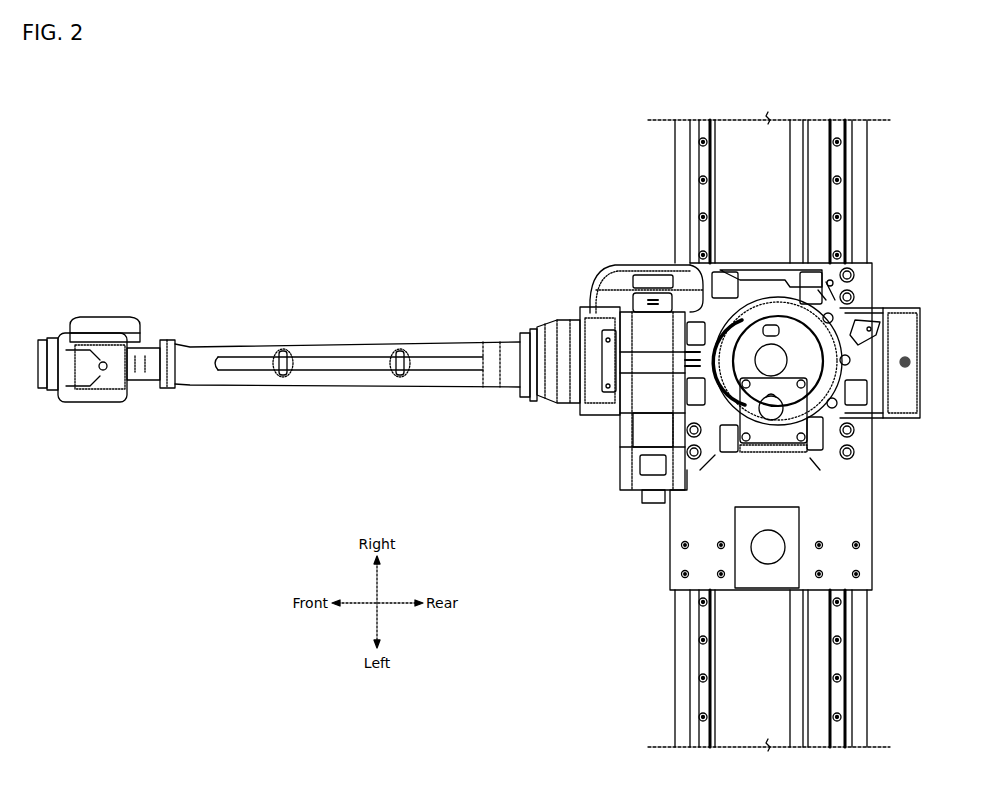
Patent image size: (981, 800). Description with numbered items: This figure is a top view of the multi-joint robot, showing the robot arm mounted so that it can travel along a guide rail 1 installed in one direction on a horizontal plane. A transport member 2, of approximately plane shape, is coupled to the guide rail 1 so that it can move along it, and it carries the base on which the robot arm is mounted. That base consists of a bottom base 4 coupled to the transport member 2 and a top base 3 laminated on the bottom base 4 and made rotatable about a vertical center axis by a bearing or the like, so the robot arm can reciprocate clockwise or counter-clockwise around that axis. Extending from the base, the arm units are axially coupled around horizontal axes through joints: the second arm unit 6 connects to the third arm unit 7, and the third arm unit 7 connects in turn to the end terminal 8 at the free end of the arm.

The guide rail 1 is at (876, 184).
The transport member 2 is at (858, 497).
The top base 3 is at (862, 435).
The bottom base 4 is at (853, 306).
The second arm unit 6 is at (652, 280).
The third arm unit 7 is at (361, 345).
The end terminal 8 is at (45, 335).